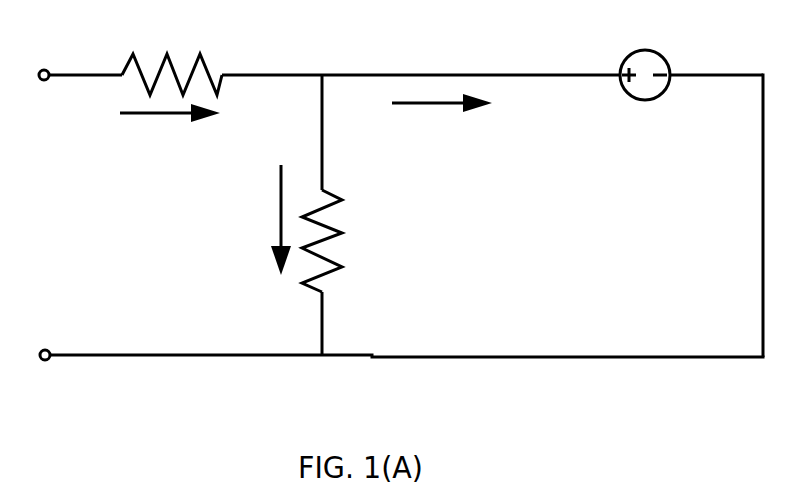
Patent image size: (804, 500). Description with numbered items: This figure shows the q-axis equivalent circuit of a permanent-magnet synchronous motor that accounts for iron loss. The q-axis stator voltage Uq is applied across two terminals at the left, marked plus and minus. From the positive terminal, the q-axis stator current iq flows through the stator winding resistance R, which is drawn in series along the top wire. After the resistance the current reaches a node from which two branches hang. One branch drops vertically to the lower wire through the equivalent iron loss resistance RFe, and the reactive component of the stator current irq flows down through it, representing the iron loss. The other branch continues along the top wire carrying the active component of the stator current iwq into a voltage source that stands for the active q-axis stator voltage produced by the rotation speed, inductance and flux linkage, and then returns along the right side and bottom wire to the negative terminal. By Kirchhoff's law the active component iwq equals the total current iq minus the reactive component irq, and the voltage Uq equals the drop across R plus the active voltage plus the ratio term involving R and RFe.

The stator winding resistance R is at (172, 62).
The equivalent iron loss resistance RFe is at (350, 241).
The q-axis stator current iq is at (170, 126).
The active component of the stator current on the q-axis iwq is at (442, 118).
The reactive component of the stator current on the q-axis irq is at (265, 220).
The q-axis stator voltage Uq is at (45, 207).